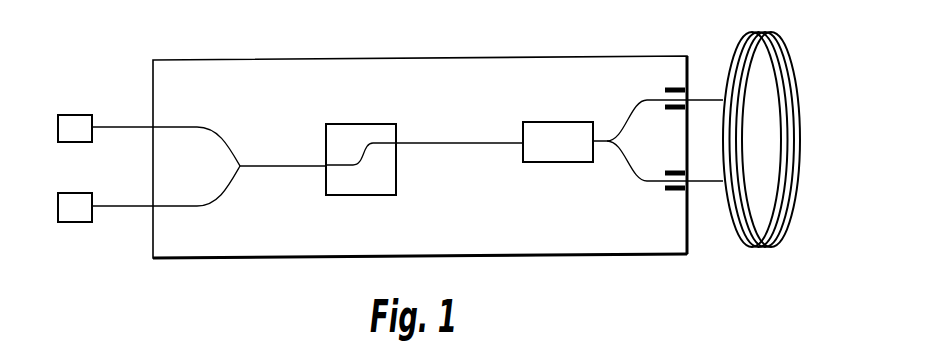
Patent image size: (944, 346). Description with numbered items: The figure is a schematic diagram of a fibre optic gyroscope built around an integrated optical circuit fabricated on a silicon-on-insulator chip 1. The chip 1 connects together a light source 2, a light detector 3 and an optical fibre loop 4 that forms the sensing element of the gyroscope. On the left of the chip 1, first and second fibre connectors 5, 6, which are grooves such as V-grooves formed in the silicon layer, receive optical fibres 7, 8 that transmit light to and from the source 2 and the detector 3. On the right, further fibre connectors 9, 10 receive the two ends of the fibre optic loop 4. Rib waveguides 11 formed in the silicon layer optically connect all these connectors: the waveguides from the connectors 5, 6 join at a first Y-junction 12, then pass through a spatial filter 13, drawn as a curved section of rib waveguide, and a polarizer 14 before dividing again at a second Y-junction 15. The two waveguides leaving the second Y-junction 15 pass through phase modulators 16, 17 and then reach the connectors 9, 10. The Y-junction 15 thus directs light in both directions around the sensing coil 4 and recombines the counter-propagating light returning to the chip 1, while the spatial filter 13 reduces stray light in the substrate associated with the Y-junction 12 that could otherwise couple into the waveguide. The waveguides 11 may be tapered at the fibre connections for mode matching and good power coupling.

The silicon-on-insulator chip 1 is at (247, 80).
The light source 2 is at (70, 122).
The light detector 3 is at (77, 208).
The optical fibre loop 4 is at (795, 67).
The first fibre connector 5 is at (157, 125).
The second fibre connector 6 is at (157, 205).
The optical fibre 7 is at (115, 125).
The optical fibre 8 is at (125, 208).
The fibre connector 9 is at (690, 100).
The fibre connector 10 is at (690, 180).
The rib waveguides 11 is at (440, 142).
The first Y-junction 12 is at (247, 163).
The spatial filter 13 is at (367, 124).
The polarizer 14 is at (555, 120).
The second Y-junction 15 is at (603, 135).
The phase modulator 16 is at (670, 87).
The phase modulator 17 is at (670, 192).